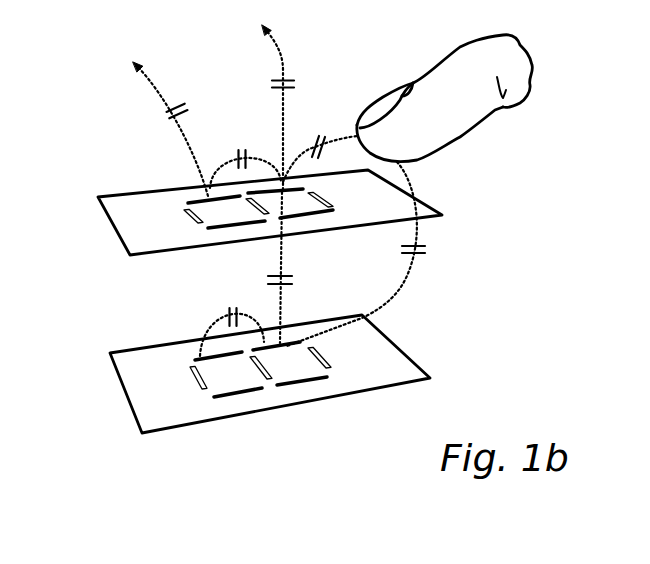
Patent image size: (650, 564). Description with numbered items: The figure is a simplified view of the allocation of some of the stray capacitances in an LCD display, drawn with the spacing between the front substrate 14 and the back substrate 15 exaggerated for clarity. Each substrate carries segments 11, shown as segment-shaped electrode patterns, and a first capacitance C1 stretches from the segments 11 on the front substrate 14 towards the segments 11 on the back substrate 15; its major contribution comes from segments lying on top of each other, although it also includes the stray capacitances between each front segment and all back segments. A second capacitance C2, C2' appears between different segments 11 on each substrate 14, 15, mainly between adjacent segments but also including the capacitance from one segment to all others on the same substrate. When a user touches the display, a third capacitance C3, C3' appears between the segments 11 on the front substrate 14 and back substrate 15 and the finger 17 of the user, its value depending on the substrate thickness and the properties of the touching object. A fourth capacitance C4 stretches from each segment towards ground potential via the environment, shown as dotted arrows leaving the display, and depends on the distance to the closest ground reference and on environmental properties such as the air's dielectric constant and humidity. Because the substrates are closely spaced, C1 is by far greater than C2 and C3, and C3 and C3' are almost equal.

The segments 11 is at (232, 228).
The front substrate 14 is at (115, 227).
The back substrate 15 is at (130, 407).
The finger 17 is at (466, 131).
The first capacitance C1 is at (302, 281).
The second capacitance C2 is at (243, 125).
The second capacitance C2' is at (192, 331).
The third capacitance C3 is at (320, 120).
The third capacitance C3' is at (406, 254).
The fourth capacitance C4 is at (163, 113).